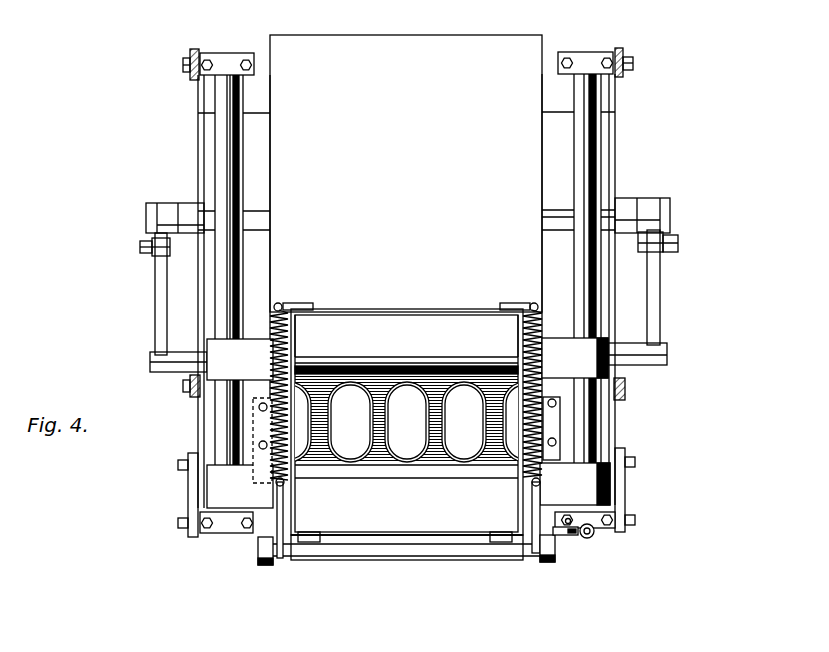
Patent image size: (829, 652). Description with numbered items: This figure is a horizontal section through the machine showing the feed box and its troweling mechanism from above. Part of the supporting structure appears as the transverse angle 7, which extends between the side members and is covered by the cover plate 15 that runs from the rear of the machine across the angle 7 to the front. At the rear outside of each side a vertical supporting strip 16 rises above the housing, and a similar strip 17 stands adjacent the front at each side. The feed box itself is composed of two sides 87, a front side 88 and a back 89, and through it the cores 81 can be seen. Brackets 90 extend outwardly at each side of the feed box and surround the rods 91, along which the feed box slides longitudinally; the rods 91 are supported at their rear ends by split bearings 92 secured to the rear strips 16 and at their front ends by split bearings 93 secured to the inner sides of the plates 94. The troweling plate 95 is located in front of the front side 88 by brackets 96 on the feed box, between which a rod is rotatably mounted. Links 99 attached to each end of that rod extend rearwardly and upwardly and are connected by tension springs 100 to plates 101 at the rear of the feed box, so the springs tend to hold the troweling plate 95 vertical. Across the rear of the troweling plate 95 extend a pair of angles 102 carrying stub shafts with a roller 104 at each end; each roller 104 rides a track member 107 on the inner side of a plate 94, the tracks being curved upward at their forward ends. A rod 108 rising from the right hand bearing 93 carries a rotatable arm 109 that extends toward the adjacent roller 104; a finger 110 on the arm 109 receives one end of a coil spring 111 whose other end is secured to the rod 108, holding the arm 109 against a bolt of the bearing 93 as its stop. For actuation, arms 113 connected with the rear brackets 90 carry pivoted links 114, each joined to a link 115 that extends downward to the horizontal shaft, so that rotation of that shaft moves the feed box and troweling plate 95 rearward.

The angle 7 is at (553, 97).
The cover plate 15 is at (468, 53).
The supporting strip 16 is at (193, 50).
The strip 17 is at (192, 377).
The cores 81 is at (510, 448).
The feed box sides 87 is at (295, 352).
The feed box front side 88 is at (422, 532).
The feed box back 89 is at (402, 310).
The brackets 90 is at (250, 350).
The rods 91 is at (223, 150).
The split bearings 92 is at (227, 62).
The split bearings 93 is at (220, 523).
The plates 94 is at (193, 498).
The troweling plate 95 is at (478, 557).
The brackets 96 is at (310, 535).
The links 99 is at (280, 527).
The tension springs 100 is at (283, 332).
The plates 101 is at (287, 305).
The angles 102 is at (340, 543).
The roller 104 is at (268, 567).
The track member 107 is at (262, 432).
The rod 108 is at (592, 537).
The arm 109 is at (560, 535).
The finger 110 is at (568, 518).
The coil spring 111 is at (570, 537).
The arms 113 is at (633, 347).
The link 114 is at (162, 292).
The link 115 is at (150, 217).